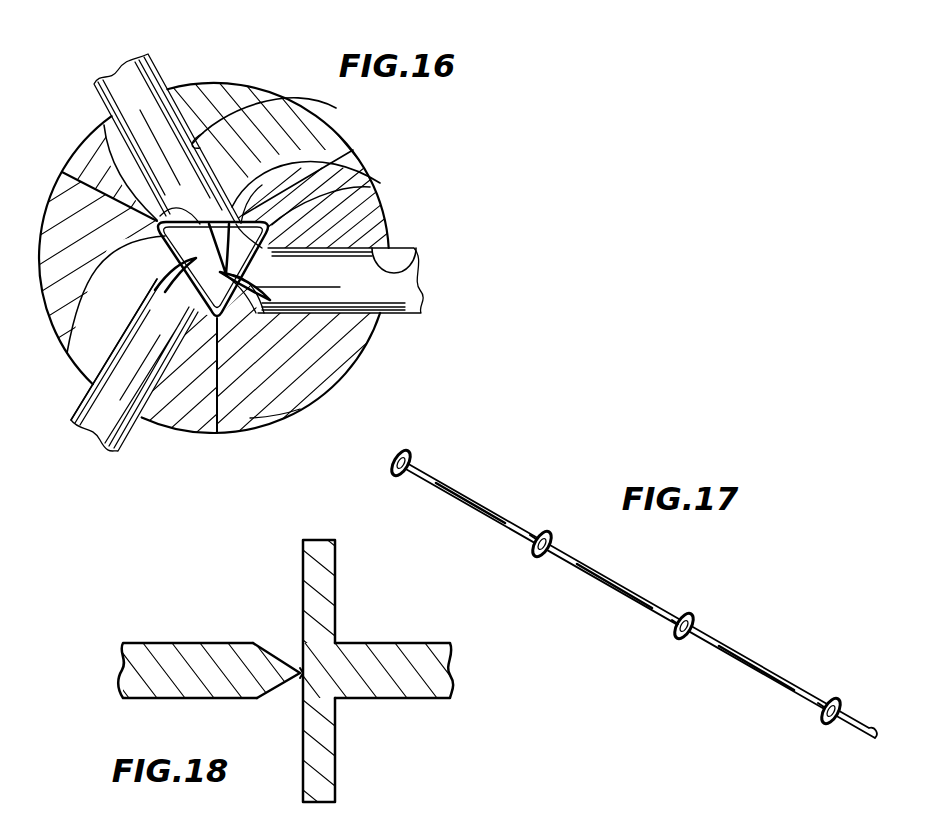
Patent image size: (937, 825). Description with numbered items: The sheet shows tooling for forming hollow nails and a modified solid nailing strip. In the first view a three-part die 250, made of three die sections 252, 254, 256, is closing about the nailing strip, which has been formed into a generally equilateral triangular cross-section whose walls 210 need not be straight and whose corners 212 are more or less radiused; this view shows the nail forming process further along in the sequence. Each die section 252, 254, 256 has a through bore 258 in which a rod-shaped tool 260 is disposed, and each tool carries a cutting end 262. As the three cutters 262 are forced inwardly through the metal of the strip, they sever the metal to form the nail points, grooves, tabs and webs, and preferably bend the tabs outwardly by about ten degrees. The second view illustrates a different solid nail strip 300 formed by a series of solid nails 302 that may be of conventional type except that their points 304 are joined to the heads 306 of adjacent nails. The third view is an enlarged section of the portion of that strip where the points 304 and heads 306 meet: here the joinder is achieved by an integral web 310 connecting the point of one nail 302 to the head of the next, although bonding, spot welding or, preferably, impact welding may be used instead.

In FIG. 16, the walls 210 is at (353, 150).
In FIG. 16, the corners 212 is at (370, 187).
In FIG. 16, the three-part die 250 is at (277, 72).
In FIG. 16, the die section 252 is at (240, 90).
In FIG. 16, the die section 254 is at (93, 419).
In FIG. 16, the die section 256 is at (292, 418).
In FIG. 16, the through bore 258 is at (292, 122).
In FIG. 16, the rod-shaped tool 260 is at (157, 92).
In FIG. 16, the cutting end 262 is at (336, 108).
In FIG. 17, the solid nail strip 300 is at (676, 559).
In FIG. 17, the solid nails 302 is at (435, 475).
In FIG. 18, the solid nails 302 is at (165, 656).
In FIG. 17, the points 304 is at (535, 530).
In FIG. 18, the points 304 is at (273, 660).
In FIG. 17, the heads 306 is at (403, 452).
In FIG. 18, the heads 306 is at (326, 587).
In FIG. 18, the integral web 310 is at (297, 676).